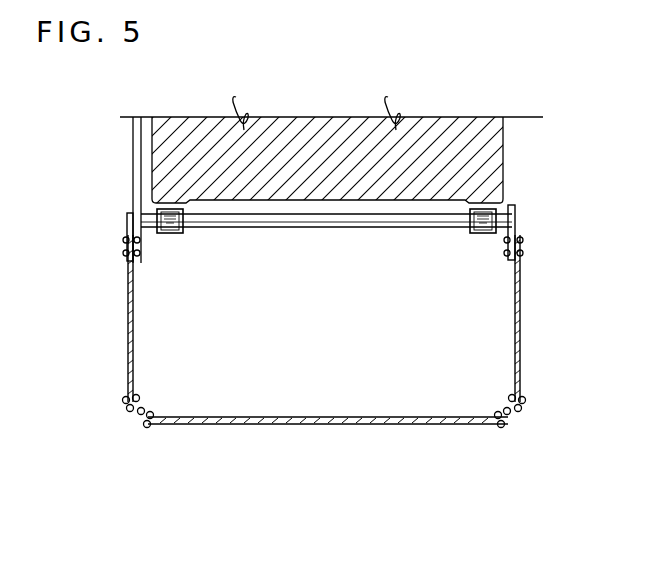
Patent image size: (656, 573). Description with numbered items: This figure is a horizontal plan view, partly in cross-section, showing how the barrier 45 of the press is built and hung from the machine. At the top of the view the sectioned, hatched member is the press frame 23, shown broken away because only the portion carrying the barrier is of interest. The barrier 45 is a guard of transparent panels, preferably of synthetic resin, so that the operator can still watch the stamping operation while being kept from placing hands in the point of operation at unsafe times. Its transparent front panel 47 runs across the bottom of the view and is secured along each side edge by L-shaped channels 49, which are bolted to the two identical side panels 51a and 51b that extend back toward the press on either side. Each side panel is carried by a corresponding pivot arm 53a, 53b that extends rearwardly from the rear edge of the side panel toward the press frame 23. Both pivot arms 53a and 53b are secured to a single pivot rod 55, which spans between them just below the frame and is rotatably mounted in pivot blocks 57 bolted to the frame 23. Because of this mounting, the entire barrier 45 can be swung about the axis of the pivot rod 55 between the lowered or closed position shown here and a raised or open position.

The frame 23 is at (452, 137).
The barrier 45 is at (388, 425).
The front panel 47 is at (452, 426).
The L-shaped channels 49 is at (143, 410).
The side panel 51a is at (126, 334).
The side panel 51b is at (521, 311).
The pivot arm 53a is at (127, 224).
The pivot arm 53b is at (518, 226).
The pivot rod 55 is at (302, 229).
The pivot blocks 57 is at (173, 234).